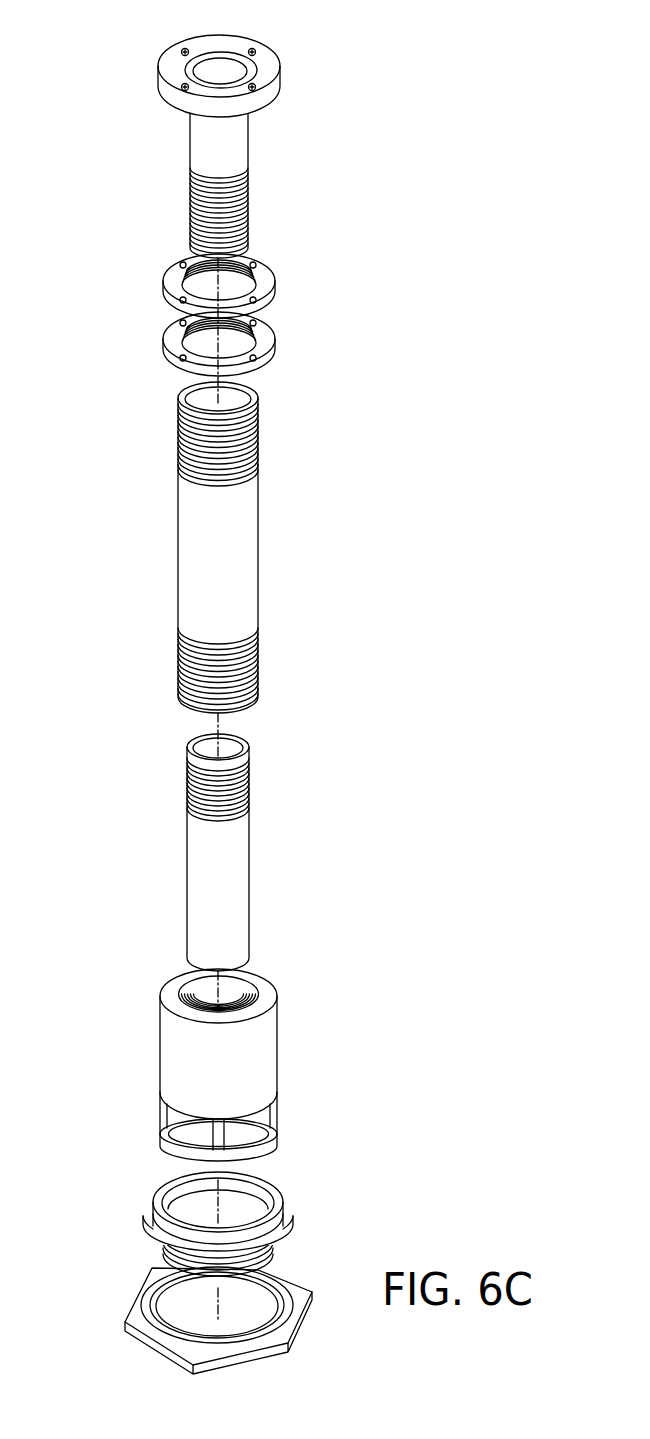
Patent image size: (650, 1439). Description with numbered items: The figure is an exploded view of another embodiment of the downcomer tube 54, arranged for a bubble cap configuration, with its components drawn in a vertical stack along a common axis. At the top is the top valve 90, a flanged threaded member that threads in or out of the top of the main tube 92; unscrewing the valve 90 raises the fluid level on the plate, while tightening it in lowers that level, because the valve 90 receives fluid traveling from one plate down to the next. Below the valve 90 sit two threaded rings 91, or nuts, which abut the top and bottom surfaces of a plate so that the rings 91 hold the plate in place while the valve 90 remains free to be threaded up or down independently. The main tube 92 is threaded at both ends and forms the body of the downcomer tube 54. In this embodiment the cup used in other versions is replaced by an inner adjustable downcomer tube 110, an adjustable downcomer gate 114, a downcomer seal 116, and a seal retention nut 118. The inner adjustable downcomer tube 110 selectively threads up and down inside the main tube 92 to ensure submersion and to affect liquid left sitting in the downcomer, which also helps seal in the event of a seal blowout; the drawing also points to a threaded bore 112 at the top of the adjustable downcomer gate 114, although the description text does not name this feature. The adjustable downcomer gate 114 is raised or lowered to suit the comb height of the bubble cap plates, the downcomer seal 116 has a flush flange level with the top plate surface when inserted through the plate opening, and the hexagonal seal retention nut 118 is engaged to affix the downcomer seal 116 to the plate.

The downcomer tube 54 is at (101, 425).
The top valve 90 is at (240, 43).
The threaded rings 91 is at (285, 255).
The main tube 92 is at (258, 556).
The inner adjustable downcomer tube 110 is at (248, 880).
The threaded bore 112 is at (247, 983).
The adjustable downcomer gate 114 is at (260, 1048).
The downcomer seal 116 is at (282, 1222).
The seal retention nut 118 is at (140, 1303).